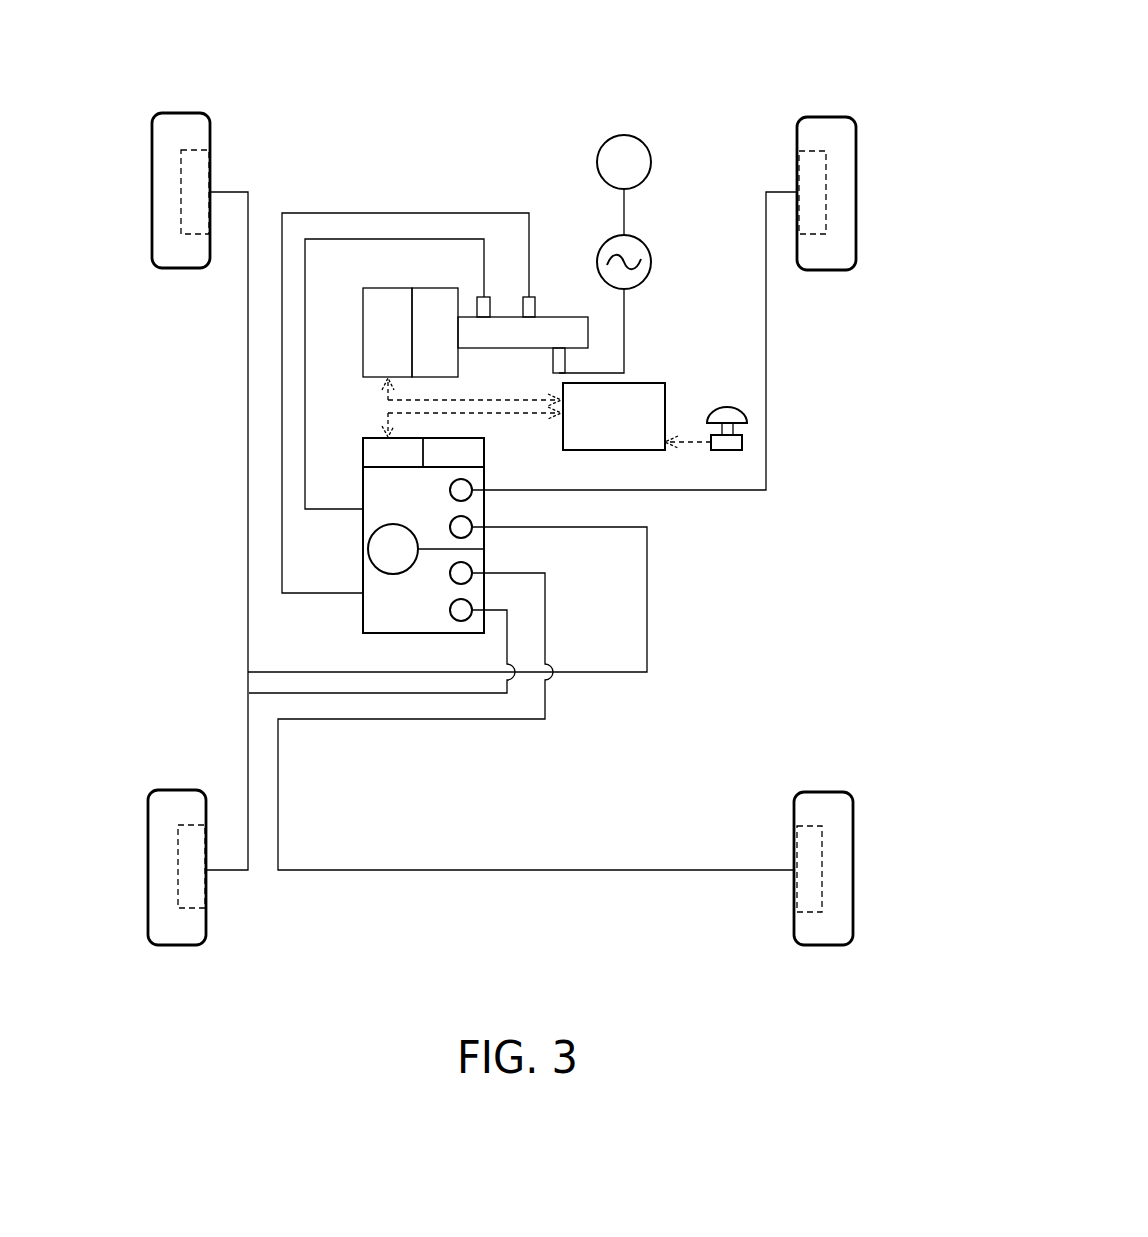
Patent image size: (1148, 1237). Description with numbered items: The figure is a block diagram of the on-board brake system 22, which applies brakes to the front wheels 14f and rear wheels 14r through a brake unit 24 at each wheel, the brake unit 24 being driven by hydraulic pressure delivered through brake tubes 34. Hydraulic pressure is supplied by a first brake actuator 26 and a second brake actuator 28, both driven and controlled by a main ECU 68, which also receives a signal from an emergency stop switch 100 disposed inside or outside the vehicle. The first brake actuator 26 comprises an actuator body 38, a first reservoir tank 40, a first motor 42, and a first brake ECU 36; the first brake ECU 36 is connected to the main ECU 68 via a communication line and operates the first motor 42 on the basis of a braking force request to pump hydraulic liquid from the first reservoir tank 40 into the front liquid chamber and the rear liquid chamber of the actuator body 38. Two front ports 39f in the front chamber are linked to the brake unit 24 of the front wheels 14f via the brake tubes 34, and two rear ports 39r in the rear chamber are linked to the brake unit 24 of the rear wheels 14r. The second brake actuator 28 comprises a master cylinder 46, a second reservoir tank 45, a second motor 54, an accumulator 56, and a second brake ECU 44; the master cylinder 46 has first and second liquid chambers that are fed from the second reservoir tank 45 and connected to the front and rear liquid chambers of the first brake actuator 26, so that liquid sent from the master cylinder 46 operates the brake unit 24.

The on-board brake system 22 is at (458, 92).
The front wheels 14f is at (170, 113).
The rear wheels 14r is at (170, 790).
The brake unit 24 is at (197, 150).
The first brake actuator 26 is at (330, 485).
The second brake actuator 28 is at (335, 327).
The brake tube 34 is at (766, 410).
The first brake ECU 36 is at (369, 437).
The actuator body 38 is at (363, 522).
The front ports 39f is at (474, 492).
The rear ports 39r is at (474, 608).
The first reservoir tank 40 is at (484, 462).
The first motor 42 is at (382, 573).
The second brake ECU 44 is at (400, 288).
The second reservoir tank 45 is at (420, 288).
The master cylinder 46 is at (535, 348).
The second motor 54 is at (631, 138).
The accumulator 56 is at (636, 240).
The main ECU 68 is at (652, 383).
The emergency stop switch 100 is at (733, 450).